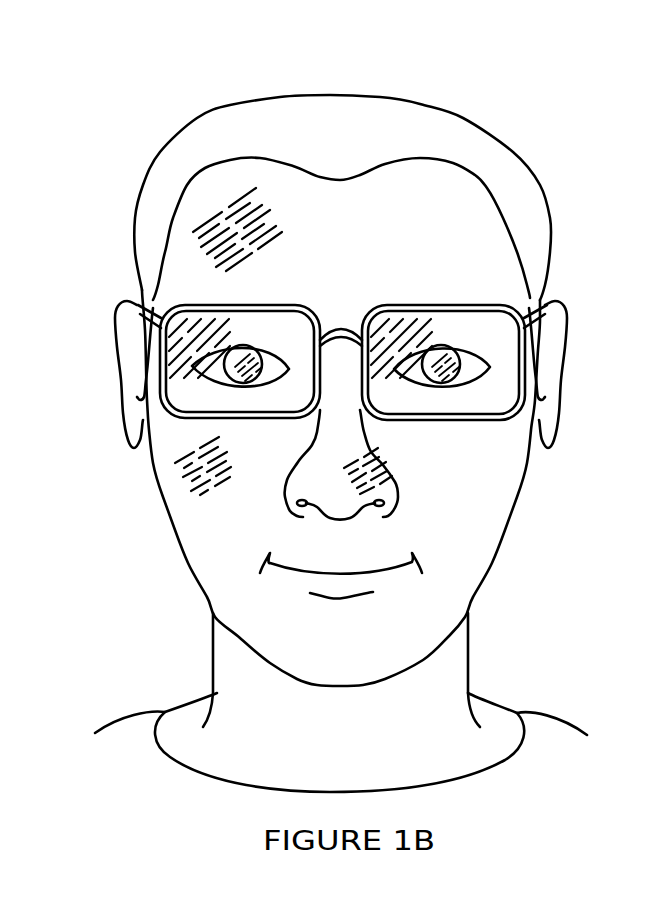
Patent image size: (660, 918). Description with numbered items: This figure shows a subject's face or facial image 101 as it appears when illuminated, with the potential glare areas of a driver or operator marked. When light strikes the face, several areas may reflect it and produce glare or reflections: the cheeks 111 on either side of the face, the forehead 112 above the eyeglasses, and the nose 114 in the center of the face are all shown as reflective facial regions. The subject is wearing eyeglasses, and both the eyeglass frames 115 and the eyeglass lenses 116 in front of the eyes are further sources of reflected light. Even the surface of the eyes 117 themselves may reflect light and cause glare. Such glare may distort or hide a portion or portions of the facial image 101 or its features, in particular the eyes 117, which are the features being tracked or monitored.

The facial image 101 is at (183, 115).
The cheeks 111 is at (183, 495).
The forehead 112 is at (220, 215).
The nose 114 is at (387, 466).
The eyeglass frames 115 is at (509, 301).
The eyeglass lenses 116 is at (195, 321).
The eyes 117 is at (276, 345).